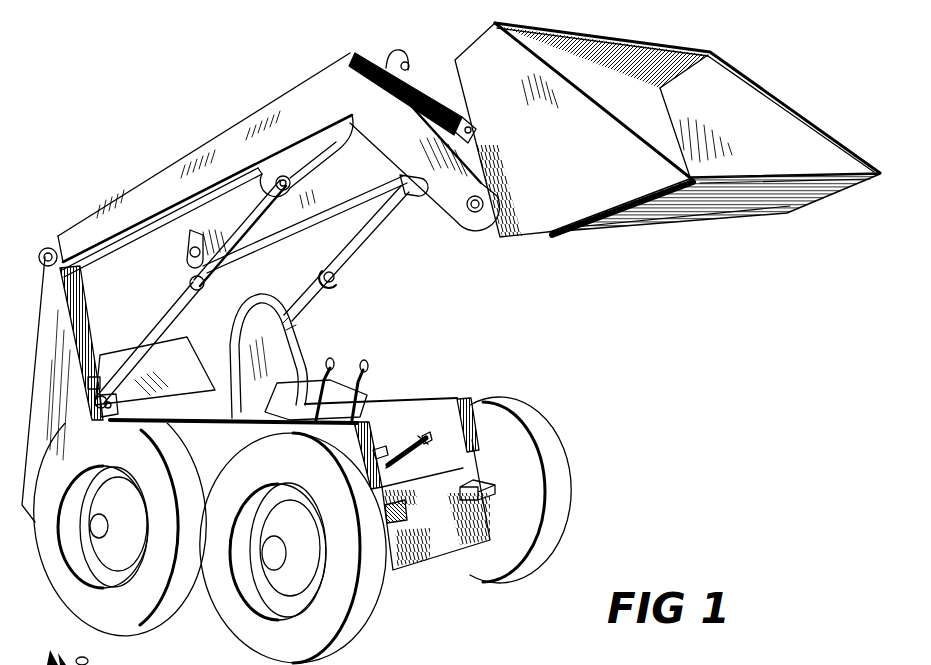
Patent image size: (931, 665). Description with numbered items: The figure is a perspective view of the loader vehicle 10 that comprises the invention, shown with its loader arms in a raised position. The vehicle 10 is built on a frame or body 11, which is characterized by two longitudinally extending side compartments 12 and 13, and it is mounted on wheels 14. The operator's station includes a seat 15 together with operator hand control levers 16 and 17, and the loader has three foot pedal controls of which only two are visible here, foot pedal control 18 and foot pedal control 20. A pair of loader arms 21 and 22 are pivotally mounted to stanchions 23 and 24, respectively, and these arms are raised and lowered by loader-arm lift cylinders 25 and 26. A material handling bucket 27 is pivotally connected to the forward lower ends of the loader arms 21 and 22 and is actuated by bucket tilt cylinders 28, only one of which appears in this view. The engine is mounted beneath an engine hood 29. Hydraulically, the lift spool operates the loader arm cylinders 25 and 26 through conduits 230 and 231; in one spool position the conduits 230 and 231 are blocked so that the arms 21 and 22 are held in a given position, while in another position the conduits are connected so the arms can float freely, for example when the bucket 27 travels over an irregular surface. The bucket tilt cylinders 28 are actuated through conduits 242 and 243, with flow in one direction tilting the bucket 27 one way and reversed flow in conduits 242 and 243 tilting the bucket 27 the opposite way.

The loader vehicle 10 is at (451, 344).
The frame or body 11 is at (428, 563).
The side compartment 12 is at (203, 475).
The side compartment 13 is at (482, 420).
The wheels 14 is at (72, 608).
The seat 15 is at (322, 326).
The operator hand control lever 16 is at (333, 367).
The operator hand control lever 17 is at (370, 377).
The foot pedal control 18 is at (425, 435).
The foot pedal control 20 is at (387, 453).
The loader arm 21 is at (242, 128).
The loader arm 22 is at (357, 190).
The stanchion 23 is at (80, 298).
The stanchion 24 is at (230, 272).
The loader-arm lift cylinder 25 is at (173, 303).
The loader-arm lift cylinder 26 is at (320, 275).
The material handling bucket 27 is at (690, 207).
The bucket tilt cylinder 28 is at (440, 97).
The engine hood 29 is at (115, 353).
The conduit 230 is at (123, 410).
The conduit 231 is at (107, 417).
The conduit 242 is at (390, 55).
The conduit 243 is at (413, 63).